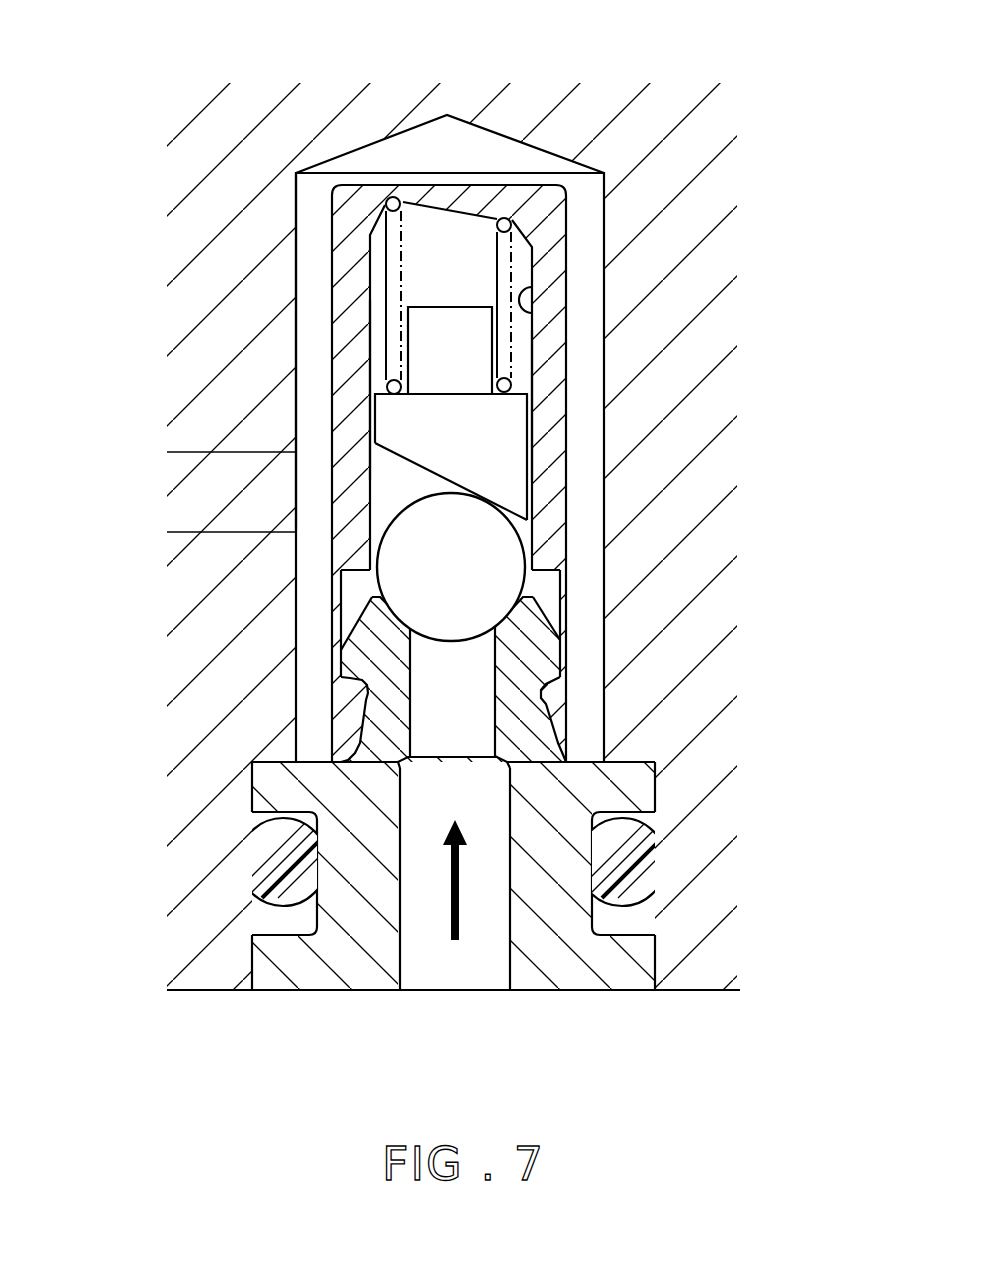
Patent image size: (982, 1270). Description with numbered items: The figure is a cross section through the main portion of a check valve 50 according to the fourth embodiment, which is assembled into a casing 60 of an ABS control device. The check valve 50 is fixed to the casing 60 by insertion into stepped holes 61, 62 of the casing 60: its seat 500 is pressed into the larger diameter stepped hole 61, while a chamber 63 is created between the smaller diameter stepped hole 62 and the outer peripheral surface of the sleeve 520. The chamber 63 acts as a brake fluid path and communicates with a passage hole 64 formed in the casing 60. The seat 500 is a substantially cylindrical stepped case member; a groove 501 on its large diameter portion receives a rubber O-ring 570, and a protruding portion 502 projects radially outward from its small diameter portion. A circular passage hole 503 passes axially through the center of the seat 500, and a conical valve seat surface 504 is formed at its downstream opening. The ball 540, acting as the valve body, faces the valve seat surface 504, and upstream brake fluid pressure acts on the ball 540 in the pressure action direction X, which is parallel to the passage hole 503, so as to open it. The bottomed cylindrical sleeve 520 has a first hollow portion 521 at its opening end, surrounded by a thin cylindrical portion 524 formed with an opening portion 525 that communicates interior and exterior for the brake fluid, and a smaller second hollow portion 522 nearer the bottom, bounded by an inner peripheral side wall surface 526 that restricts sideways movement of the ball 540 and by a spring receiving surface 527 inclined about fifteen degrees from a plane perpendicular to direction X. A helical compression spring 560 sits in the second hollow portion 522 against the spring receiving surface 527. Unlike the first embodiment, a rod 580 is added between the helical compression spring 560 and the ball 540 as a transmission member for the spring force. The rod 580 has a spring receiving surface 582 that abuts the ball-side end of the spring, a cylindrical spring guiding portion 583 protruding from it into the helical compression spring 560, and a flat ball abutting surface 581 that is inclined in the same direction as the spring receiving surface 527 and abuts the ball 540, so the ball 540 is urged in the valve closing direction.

The casing 60 is at (210, 145).
The passage hole 64 is at (220, 452).
The check valve 50 is at (325, 230).
The chamber 63 is at (313, 275).
The stepped hole 62 is at (295, 607).
The sleeve 520 is at (353, 210).
The spring receiving surface 527 is at (433, 203).
The second hollow portion 522 is at (472, 262).
The inner peripheral side wall surface 526 is at (530, 313).
The first hollow portion 521 is at (566, 567).
The valve seat surface 504 is at (561, 628).
The opening portion 525 is at (339, 637).
The spring receiving surface 582 is at (438, 392).
The helical compression spring 560 is at (513, 383).
The spring guiding portion 583 is at (423, 327).
The rod 580 is at (372, 413).
The ball abutting surface 581 is at (392, 461).
The protruding portion 502 is at (550, 662).
The cylindrical portion 524 is at (562, 607).
The ball 540 is at (403, 555).
The seat 500 is at (570, 967).
The stepped hole 61 is at (250, 922).
The groove 501 is at (658, 913).
The passage hole 503 is at (512, 947).
The O-ring 570 is at (637, 850).
The pressure action direction X is at (452, 925).